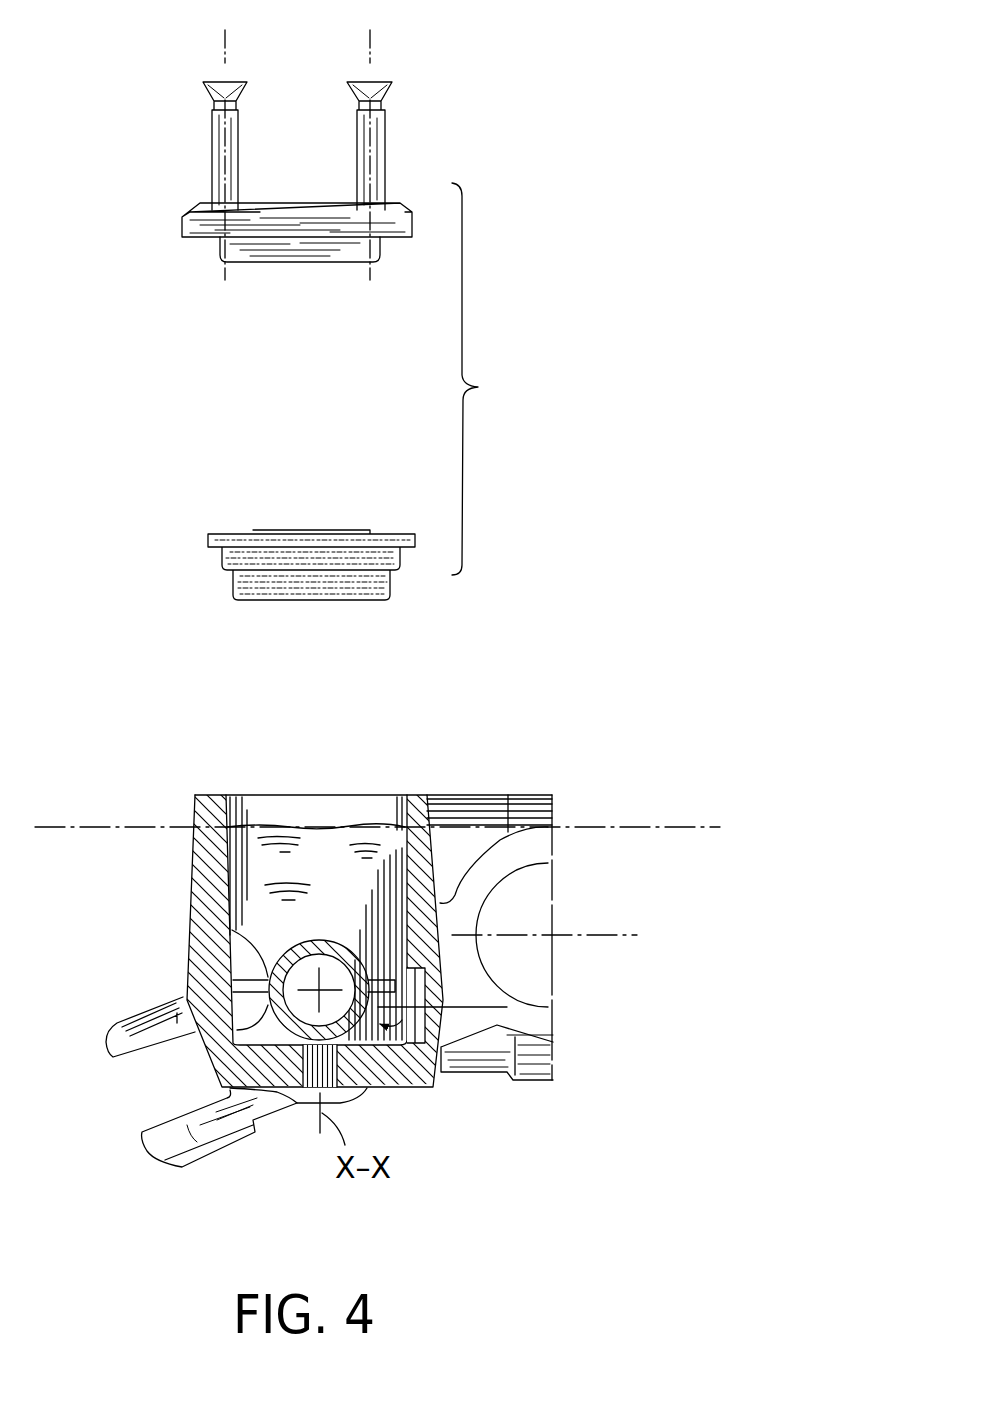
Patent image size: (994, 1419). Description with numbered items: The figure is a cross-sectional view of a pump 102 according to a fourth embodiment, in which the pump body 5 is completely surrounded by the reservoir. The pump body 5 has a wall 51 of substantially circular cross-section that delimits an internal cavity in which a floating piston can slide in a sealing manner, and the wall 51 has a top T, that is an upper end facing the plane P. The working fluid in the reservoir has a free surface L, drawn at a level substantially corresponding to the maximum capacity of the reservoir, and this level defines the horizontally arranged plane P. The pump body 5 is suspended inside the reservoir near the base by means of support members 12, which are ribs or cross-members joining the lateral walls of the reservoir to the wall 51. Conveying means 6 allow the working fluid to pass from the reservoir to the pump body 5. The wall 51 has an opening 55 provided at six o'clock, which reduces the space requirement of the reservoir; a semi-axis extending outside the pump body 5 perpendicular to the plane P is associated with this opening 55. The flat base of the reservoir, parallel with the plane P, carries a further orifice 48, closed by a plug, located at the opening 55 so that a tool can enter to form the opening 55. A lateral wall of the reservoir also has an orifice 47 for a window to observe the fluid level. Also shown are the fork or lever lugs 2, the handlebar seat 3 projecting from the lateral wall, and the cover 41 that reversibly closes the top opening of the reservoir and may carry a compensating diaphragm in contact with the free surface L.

The lever lugs 2 is at (127, 1033).
The handlebar seat 3 is at (517, 825).
The pump body 5 is at (212, 1060).
The conveying means 6 is at (423, 1080).
The support members 12 is at (228, 960).
The cover 41 is at (363, 315).
The orifice 47 is at (436, 988).
The further orifice 48 is at (297, 1108).
The wall 51 is at (218, 925).
The opening 55 is at (367, 1090).
The pump 102 is at (534, 645).
The free surface L is at (286, 818).
The plane P is at (60, 825).
The top T is at (318, 943).